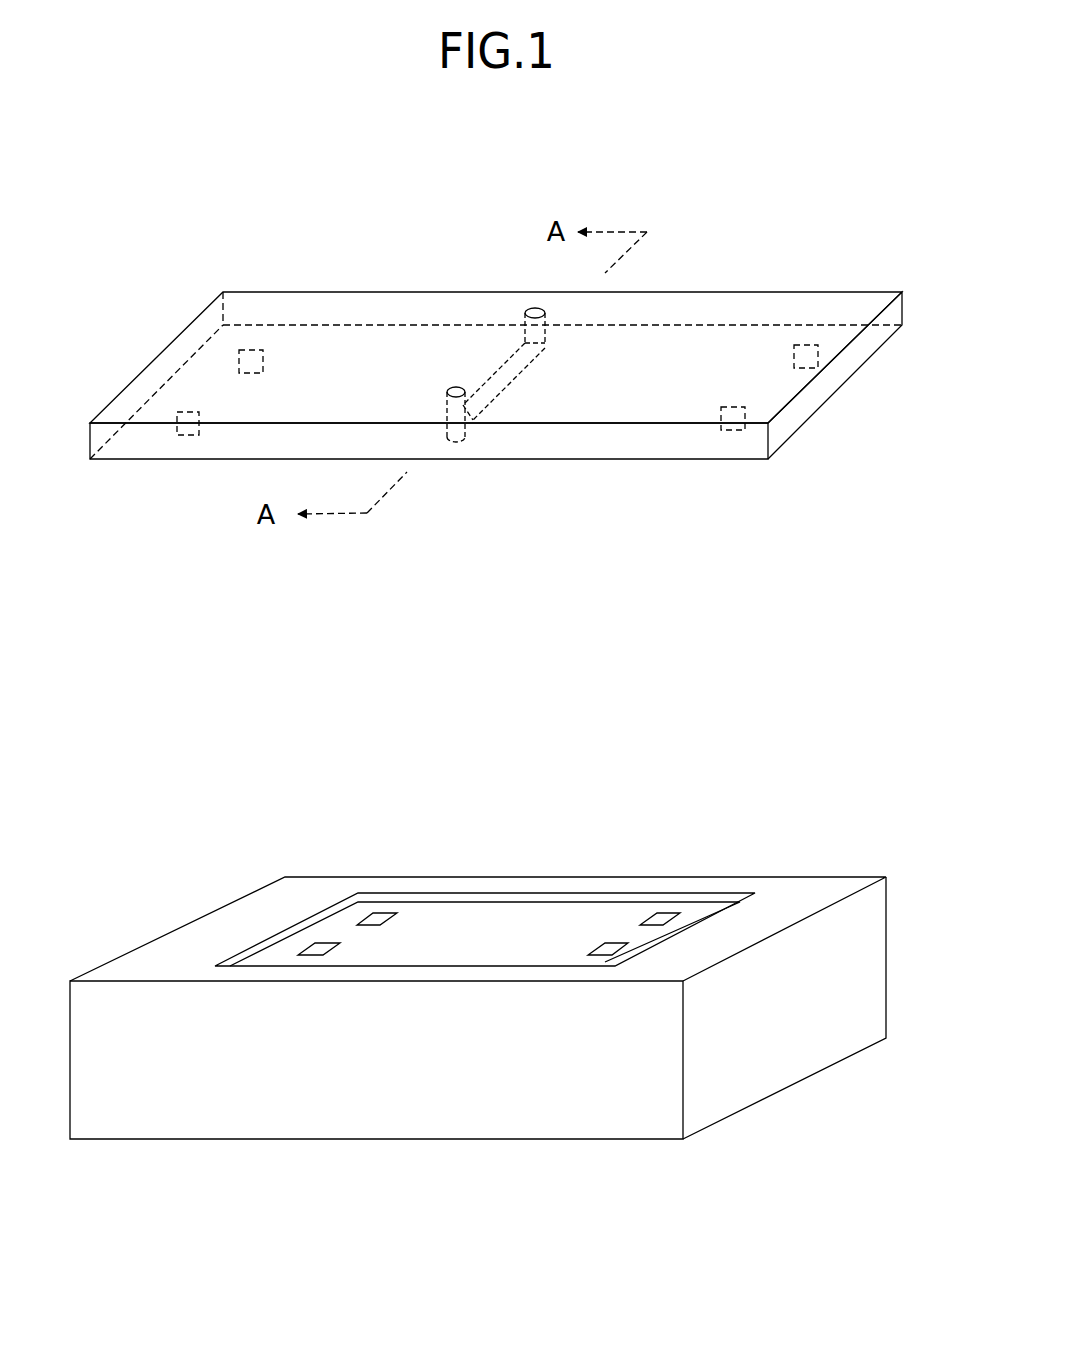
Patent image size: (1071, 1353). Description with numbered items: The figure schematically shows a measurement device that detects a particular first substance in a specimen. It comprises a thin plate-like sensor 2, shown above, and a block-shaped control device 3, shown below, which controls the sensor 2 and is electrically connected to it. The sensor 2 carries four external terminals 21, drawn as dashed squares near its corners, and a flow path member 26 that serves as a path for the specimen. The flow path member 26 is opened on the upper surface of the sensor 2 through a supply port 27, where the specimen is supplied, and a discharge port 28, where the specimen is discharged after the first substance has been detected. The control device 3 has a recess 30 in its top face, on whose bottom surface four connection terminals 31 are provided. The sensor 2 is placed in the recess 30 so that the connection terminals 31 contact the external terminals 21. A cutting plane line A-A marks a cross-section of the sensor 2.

The sensor 2 is at (268, 237).
The external terminal 21 is at (247, 352).
The flow path member 26 is at (517, 377).
The supply port 27 is at (535, 310).
The discharge port 28 is at (452, 392).
The control device 3 is at (580, 845).
The recess 30 is at (467, 932).
The connection terminal 31 is at (377, 918).